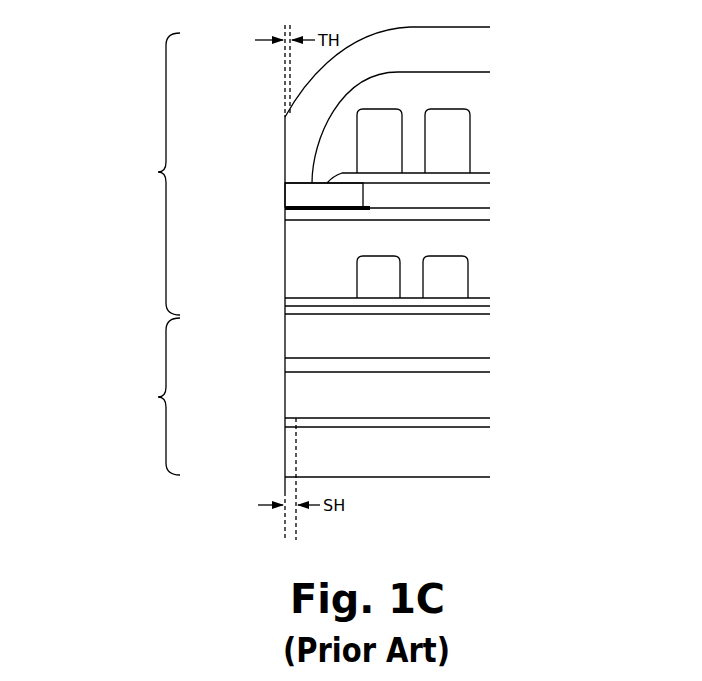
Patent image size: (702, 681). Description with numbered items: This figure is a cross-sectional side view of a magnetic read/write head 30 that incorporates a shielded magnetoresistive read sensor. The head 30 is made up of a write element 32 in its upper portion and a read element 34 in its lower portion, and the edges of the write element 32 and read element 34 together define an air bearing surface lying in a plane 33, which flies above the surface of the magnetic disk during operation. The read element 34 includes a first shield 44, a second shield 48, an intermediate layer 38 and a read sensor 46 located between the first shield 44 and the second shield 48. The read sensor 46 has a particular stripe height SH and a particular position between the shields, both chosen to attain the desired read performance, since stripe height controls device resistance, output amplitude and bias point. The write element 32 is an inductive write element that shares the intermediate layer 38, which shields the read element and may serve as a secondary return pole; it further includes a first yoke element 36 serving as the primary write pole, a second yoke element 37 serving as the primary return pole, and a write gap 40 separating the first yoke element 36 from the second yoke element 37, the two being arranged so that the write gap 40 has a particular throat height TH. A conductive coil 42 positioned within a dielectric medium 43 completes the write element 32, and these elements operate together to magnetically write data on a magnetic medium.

The magnetic read/write head 30 is at (594, 108).
The write element 32 is at (151, 174).
The plane 33 is at (284, 529).
The read element 34 is at (153, 396).
The first yoke element 36 is at (284, 221).
The second yoke element 37 is at (481, 52).
The intermediate layer 38 is at (484, 340).
The write gap 40 is at (284, 208).
The conductive coil 42 is at (476, 138).
The dielectric medium 43 is at (484, 247).
The first shield 44 is at (492, 475).
The read sensor 46 is at (284, 428).
The second shield 48 is at (484, 398).